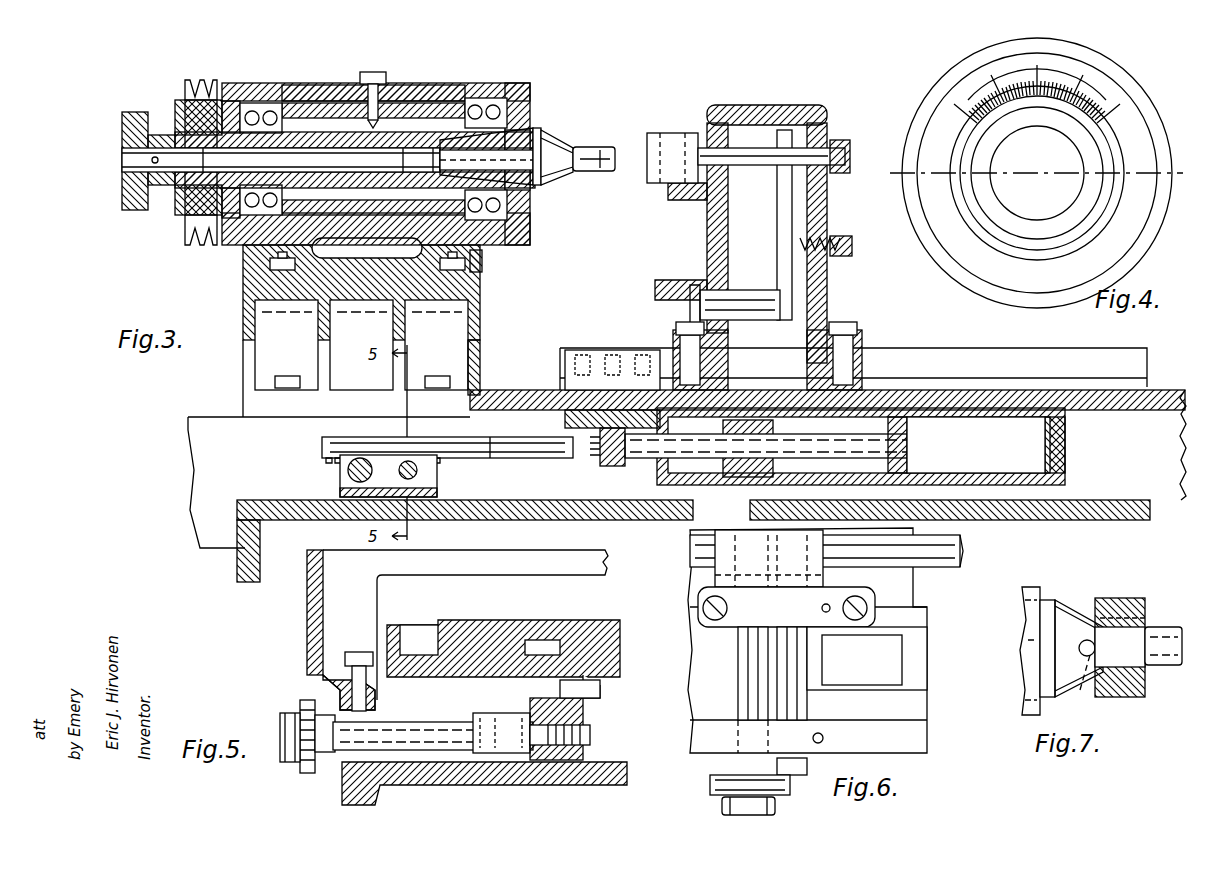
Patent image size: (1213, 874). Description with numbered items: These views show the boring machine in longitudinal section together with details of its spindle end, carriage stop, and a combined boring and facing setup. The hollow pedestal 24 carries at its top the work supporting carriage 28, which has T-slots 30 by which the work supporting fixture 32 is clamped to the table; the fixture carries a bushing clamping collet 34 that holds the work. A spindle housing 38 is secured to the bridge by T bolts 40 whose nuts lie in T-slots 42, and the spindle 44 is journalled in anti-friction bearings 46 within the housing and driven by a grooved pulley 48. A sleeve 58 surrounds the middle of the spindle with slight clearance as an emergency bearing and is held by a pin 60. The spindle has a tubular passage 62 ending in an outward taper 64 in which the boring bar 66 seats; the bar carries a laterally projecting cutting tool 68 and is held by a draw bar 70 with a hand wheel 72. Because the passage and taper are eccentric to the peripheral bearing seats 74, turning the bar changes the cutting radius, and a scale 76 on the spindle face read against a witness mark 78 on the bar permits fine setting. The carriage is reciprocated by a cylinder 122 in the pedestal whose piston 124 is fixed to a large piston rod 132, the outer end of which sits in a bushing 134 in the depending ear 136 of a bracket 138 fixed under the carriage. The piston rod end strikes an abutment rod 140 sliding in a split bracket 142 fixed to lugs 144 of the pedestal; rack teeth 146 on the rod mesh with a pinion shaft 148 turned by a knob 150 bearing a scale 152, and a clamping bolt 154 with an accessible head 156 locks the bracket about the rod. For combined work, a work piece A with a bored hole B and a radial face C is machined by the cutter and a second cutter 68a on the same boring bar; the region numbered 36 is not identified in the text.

In FIG. 3, the hollow base or pedestal 24 is at (200, 548).
In FIG. 5, the hollow base or pedestal 24 is at (385, 785).
In FIG. 6, the hollow base or pedestal 24 is at (690, 692).
In FIG. 3, the work supporting carriage or table 28 is at (965, 390).
In FIG. 5, the work supporting carriage or table 28 is at (605, 622).
In FIG. 5, the T-slots 30 is at (540, 640).
In FIG. 3, the work supporting fixture 32 is at (827, 216).
In FIG. 3, the bushing clamping collet 34 is at (665, 133).
In FIG. 3, the headstock lower body 36 is at (482, 292).
In FIG. 5, the headstock lower body 36 is at (307, 620).
In FIG. 3, the spindle housing 38 is at (400, 85).
In FIG. 3, the T bolts 40 is at (484, 258).
In FIG. 3, the T-slots 42 is at (270, 270).
In FIG. 3, the spindle 44 is at (340, 130).
In FIG. 4, the spindle 44 is at (920, 103).
In FIG. 7, the spindle 44 is at (1022, 594).
In FIG. 3, the anti-friction bearings 46 is at (258, 103).
In FIG. 3, the grooved pulley 48 is at (185, 94).
In FIG. 3, the sleeve 58 is at (432, 103).
In FIG. 3, the pin 60 is at (374, 72).
In FIG. 3, the tubular passage 62 is at (205, 195).
In FIG. 3, the outward taper 64 is at (540, 150).
In FIG. 3, the boring bar 66 is at (558, 170).
In FIG. 7, the boring bar 66 is at (1060, 600).
In FIG. 3, the cutting tool 68 is at (605, 147).
In FIG. 7, the cutting tool 68 is at (1160, 627).
In FIG. 7, the second cutter 68a is at (1087, 640).
In FIG. 3, the draw bar 70 is at (130, 162).
In FIG. 3, the hand wheel 72 is at (122, 124).
In FIG. 3, the peripheral bearing seats 74 is at (310, 132).
In FIG. 4, the scale 76 is at (1090, 98).
In FIG. 3, the witness mark 78 is at (545, 158).
In FIG. 7, the witness mark 78 is at (1040, 640).
In FIG. 3, the cylinder 122 is at (1005, 485).
In FIG. 3, the piston 124 is at (897, 417).
In FIG. 3, the piston rod 132 is at (712, 458).
In FIG. 3, the bushing 134 is at (735, 466).
In FIG. 3, the depending ear 136 is at (640, 462).
In FIG. 3, the bracket 138 is at (598, 430).
In FIG. 3, the abutment rod 140 is at (548, 455).
In FIG. 5, the abutment rod 140 is at (596, 698).
In FIG. 6, the abutment rod 140 is at (690, 548).
In FIG. 3, the split bracket 142 is at (340, 480).
In FIG. 5, the split bracket 142 is at (583, 710).
In FIG. 6, the split bracket 142 is at (715, 573).
In FIG. 3, the lugs 144 is at (340, 493).
In FIG. 5, the lugs 144 is at (478, 716).
In FIG. 6, the lugs 144 is at (875, 596).
In FIG. 3, the rack teeth 146 is at (326, 460).
In FIG. 5, the rack teeth 146 is at (590, 735).
In FIG. 3, the pinion shaft 148 is at (348, 470).
In FIG. 6, the pinion shaft 148 is at (748, 656).
In FIG. 5, the knob 150 is at (285, 713).
In FIG. 6, the knob 150 is at (722, 806).
In FIG. 5, the scale 152 is at (305, 700).
In FIG. 6, the scale 152 is at (710, 784).
In FIG. 3, the clamping bolt 154 is at (417, 470).
In FIG. 5, the clamping bolt 154 is at (415, 728).
In FIG. 6, the clamping bolt 154 is at (800, 708).
In FIG. 5, the head 156 is at (325, 752).
In FIG. 6, the head 156 is at (808, 766).
In FIG. 7, the work piece A is at (1128, 690).
In FIG. 7, the bored hole B is at (1130, 628).
In FIG. 7, the radial face C is at (1118, 616).